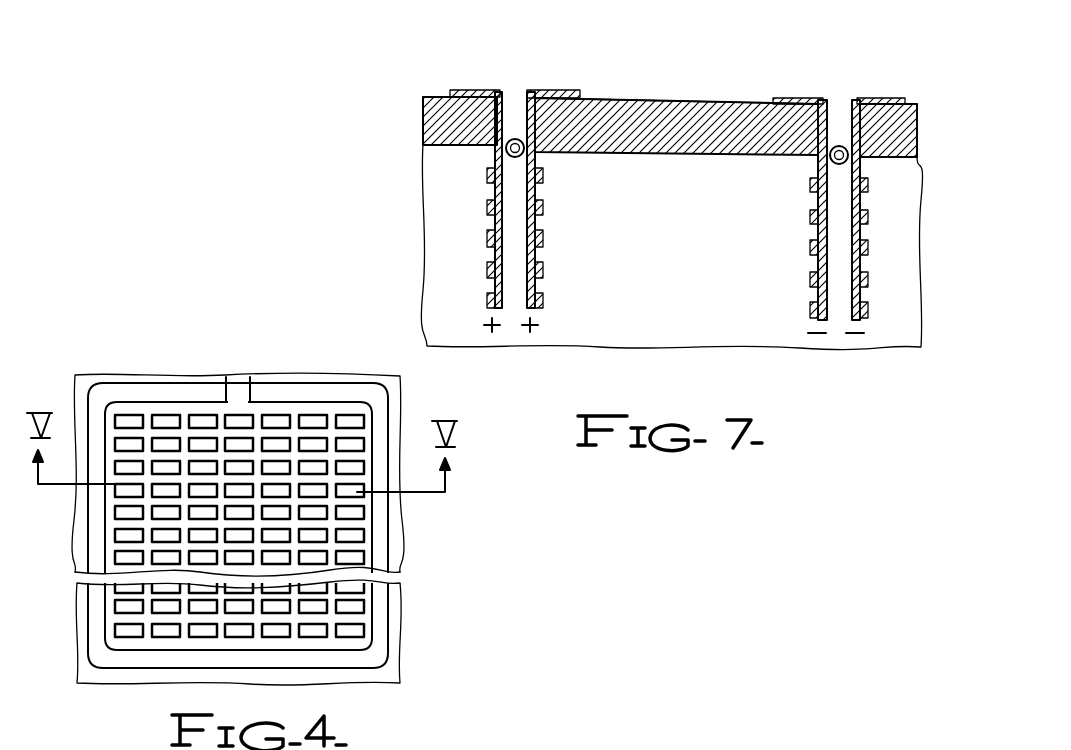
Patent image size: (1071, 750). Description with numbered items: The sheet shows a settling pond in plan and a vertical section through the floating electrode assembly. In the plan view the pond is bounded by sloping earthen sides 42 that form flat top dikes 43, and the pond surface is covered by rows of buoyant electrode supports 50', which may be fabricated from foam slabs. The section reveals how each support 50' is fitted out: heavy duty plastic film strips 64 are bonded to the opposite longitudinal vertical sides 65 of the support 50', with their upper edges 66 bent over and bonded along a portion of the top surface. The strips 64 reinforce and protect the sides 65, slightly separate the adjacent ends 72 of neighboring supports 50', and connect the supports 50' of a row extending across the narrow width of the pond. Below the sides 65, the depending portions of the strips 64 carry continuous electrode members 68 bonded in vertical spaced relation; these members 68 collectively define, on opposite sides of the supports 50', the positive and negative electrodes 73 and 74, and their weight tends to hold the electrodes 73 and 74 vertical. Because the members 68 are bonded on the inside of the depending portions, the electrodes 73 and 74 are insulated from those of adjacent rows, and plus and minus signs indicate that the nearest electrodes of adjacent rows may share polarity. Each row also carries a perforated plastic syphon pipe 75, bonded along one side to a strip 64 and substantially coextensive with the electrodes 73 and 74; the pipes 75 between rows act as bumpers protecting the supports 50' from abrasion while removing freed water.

In FIG. 4, the sloping earthen sides 42 is at (200, 397).
In FIG. 4, the flat top dikes 43 is at (95, 382).
In FIG. 7, the buoyant electrode support 50' is at (679, 71).
In FIG. 4, the buoyant electrode support 50' is at (245, 485).
In FIG. 7, the plastic film strip 64 is at (495, 158).
In FIG. 7, the longitudinal vertical sides 65 is at (556, 96).
In FIG. 7, the upper edges 66 is at (440, 96).
In FIG. 7, the electrode members 68 is at (543, 272).
In FIG. 7, the adjacent ends 72 is at (423, 130).
In FIG. 7, the positive electrode 73 is at (543, 222).
In FIG. 7, the negative electrode 74 is at (487, 266).
In FIG. 7, the perforated plastic syphon pipe 75 is at (515, 138).